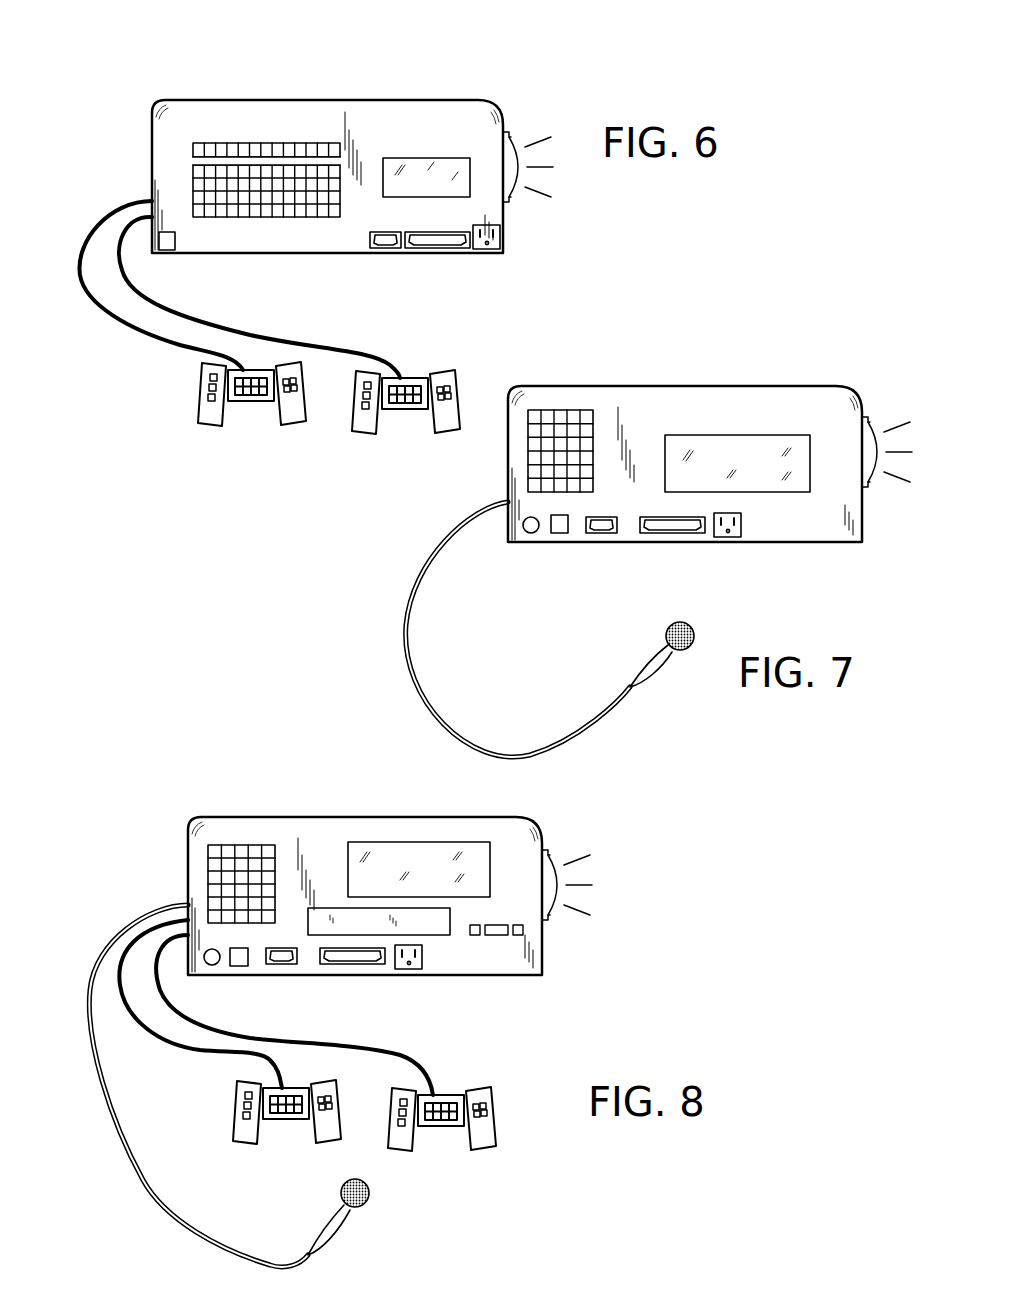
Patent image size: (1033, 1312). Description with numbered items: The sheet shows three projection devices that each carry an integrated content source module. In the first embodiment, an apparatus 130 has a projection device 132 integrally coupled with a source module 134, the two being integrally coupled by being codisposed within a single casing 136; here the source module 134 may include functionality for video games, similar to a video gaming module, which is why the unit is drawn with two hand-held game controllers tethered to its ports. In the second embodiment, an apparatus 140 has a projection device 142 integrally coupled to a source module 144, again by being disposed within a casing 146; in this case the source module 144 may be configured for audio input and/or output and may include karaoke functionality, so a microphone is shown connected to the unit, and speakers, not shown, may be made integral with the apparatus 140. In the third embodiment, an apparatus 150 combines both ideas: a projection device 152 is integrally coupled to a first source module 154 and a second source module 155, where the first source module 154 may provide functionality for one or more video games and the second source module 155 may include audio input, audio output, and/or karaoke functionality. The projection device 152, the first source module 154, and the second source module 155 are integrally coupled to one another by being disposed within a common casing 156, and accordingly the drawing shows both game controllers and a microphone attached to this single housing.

In FIG. 6, the apparatus 130 is at (150, 68).
In FIG. 6, the projection device 132 is at (408, 110).
In FIG. 6, the source module 134 is at (316, 240).
In FIG. 6, the casing 136 is at (246, 100).
In FIG. 7, the apparatus 140 is at (756, 298).
In FIG. 7, the projection device 142 is at (765, 397).
In FIG. 7, the source module 144 is at (767, 525).
In FIG. 7, the casing 146 is at (602, 388).
In FIG. 8, the apparatus 150 is at (207, 765).
In FIG. 8, the projection device 152 is at (505, 847).
In FIG. 8, the first source module 154 is at (483, 950).
In FIG. 8, the second source module 155 is at (256, 957).
In FIG. 8, the casing 156 is at (282, 817).